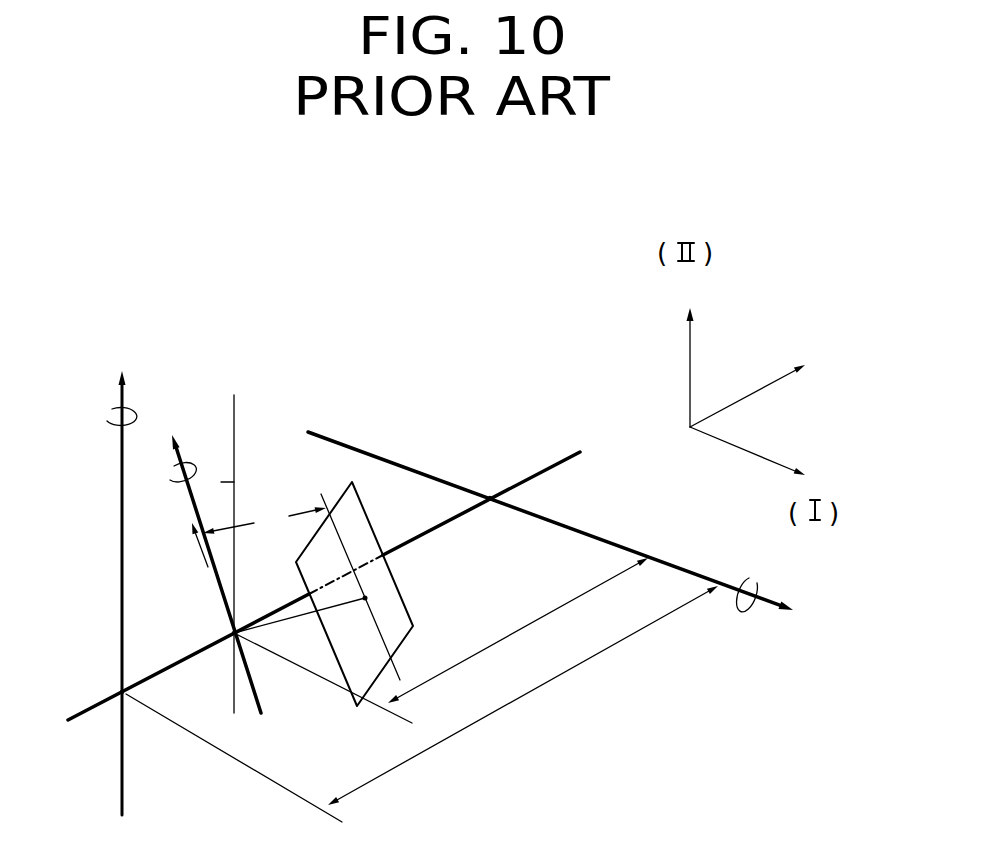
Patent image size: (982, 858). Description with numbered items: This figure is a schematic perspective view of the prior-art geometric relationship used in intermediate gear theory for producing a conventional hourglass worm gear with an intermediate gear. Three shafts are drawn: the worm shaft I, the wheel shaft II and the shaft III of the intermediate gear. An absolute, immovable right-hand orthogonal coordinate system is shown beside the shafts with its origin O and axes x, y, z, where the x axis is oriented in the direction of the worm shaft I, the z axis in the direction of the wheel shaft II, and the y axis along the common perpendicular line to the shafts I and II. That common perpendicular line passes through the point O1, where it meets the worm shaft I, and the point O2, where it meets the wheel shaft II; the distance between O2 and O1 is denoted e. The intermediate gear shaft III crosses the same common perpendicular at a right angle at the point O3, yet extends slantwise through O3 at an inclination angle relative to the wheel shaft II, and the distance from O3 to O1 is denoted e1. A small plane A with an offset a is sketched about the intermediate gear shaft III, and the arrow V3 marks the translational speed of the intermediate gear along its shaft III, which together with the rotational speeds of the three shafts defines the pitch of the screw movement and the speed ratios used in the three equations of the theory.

The worm shaft I is at (802, 607).
The wheel shaft II is at (115, 333).
The intermediate gear shaft III is at (183, 395).
The intersection point of worm shaft with common perpendicular line O1 is at (492, 496).
The intersection point of wheel shaft with common perpendicular line O2 is at (118, 688).
The intersection point of intermediate gear shaft with common perpendicular line O3 is at (230, 630).
The translational speed of intermediate gear V3 is at (182, 546).
The offset distance a is at (264, 519).
The plane A is at (364, 536).
The distance between points O2 and O1 e is at (422, 704).
The distance between points O3 and O1 e1 is at (443, 640).
The origin of absolute coordinate system O is at (743, 384).
The x-coordinate x is at (690, 429).
The y-coordinate y is at (755, 387).
The z-coordinate z is at (689, 351).